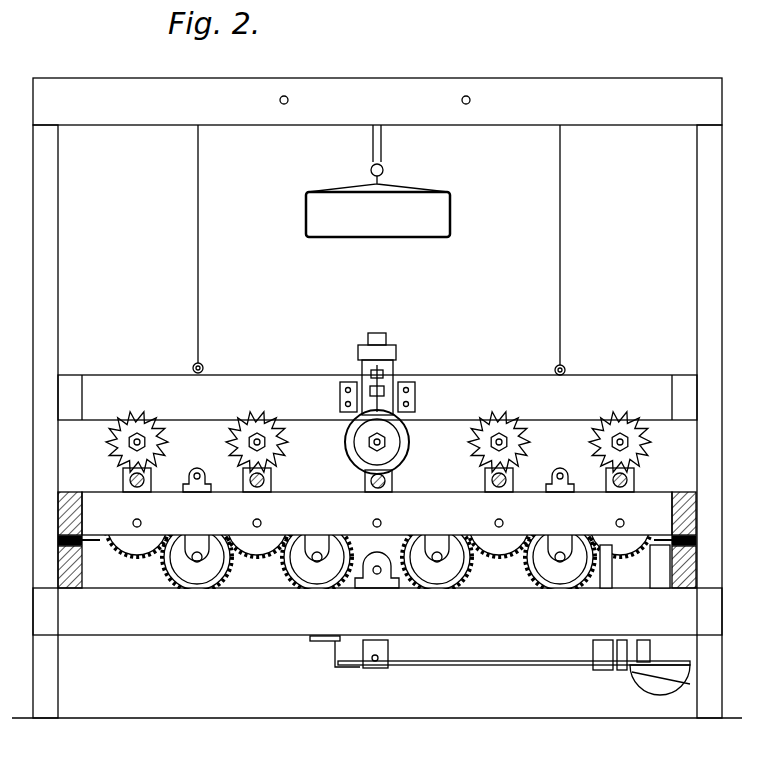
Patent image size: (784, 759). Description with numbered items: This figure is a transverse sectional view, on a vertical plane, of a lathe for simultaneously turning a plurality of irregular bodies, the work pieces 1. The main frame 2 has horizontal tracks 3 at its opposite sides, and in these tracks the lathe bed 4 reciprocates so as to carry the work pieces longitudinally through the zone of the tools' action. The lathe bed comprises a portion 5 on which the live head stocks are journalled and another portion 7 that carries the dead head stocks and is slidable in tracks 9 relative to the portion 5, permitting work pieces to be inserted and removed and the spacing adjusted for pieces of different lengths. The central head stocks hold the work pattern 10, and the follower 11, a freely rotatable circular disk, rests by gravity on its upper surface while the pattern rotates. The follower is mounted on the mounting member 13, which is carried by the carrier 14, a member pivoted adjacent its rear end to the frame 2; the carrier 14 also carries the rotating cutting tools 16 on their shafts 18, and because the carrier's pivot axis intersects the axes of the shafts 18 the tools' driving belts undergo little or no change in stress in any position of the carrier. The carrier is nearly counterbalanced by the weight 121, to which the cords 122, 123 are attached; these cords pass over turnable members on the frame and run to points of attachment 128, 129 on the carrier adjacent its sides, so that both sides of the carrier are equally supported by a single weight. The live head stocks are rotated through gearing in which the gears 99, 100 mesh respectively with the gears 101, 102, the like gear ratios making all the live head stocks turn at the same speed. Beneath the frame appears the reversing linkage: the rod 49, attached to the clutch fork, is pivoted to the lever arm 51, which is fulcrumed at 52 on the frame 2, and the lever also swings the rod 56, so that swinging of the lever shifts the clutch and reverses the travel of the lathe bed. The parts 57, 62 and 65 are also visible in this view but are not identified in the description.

The work pieces 1 is at (138, 494).
The main frame 2 is at (76, 576).
The horizontal tracks 3 is at (58, 548).
The lathe bed 4 is at (377, 513).
The lathe bed portion 5 is at (279, 517).
The lathe bed portion 7 is at (70, 493).
The tracks 9 is at (377, 525).
The work pattern 10 is at (377, 494).
The follower 11 is at (405, 456).
The mounting member 13 is at (393, 387).
The carrier 14 is at (552, 406).
The cutting tools 16 is at (378, 442).
The shafts 18 is at (386, 442).
The rod 49 is at (386, 664).
The lever arm 51 is at (514, 655).
The fulcrum 52 is at (346, 671).
The rod 56 is at (378, 670).
The bracket 57 is at (604, 673).
The sector 62 is at (652, 689).
The stop 65 is at (650, 663).
The gear 99 is at (317, 557).
The gear 100 is at (437, 557).
The gear 101 is at (257, 525).
The gear 102 is at (499, 525).
The weight 121 is at (348, 218).
The cord 122 is at (558, 258).
The cord 123 is at (200, 273).
The point of attachment 128 is at (565, 369).
The point of attachment 129 is at (202, 367).